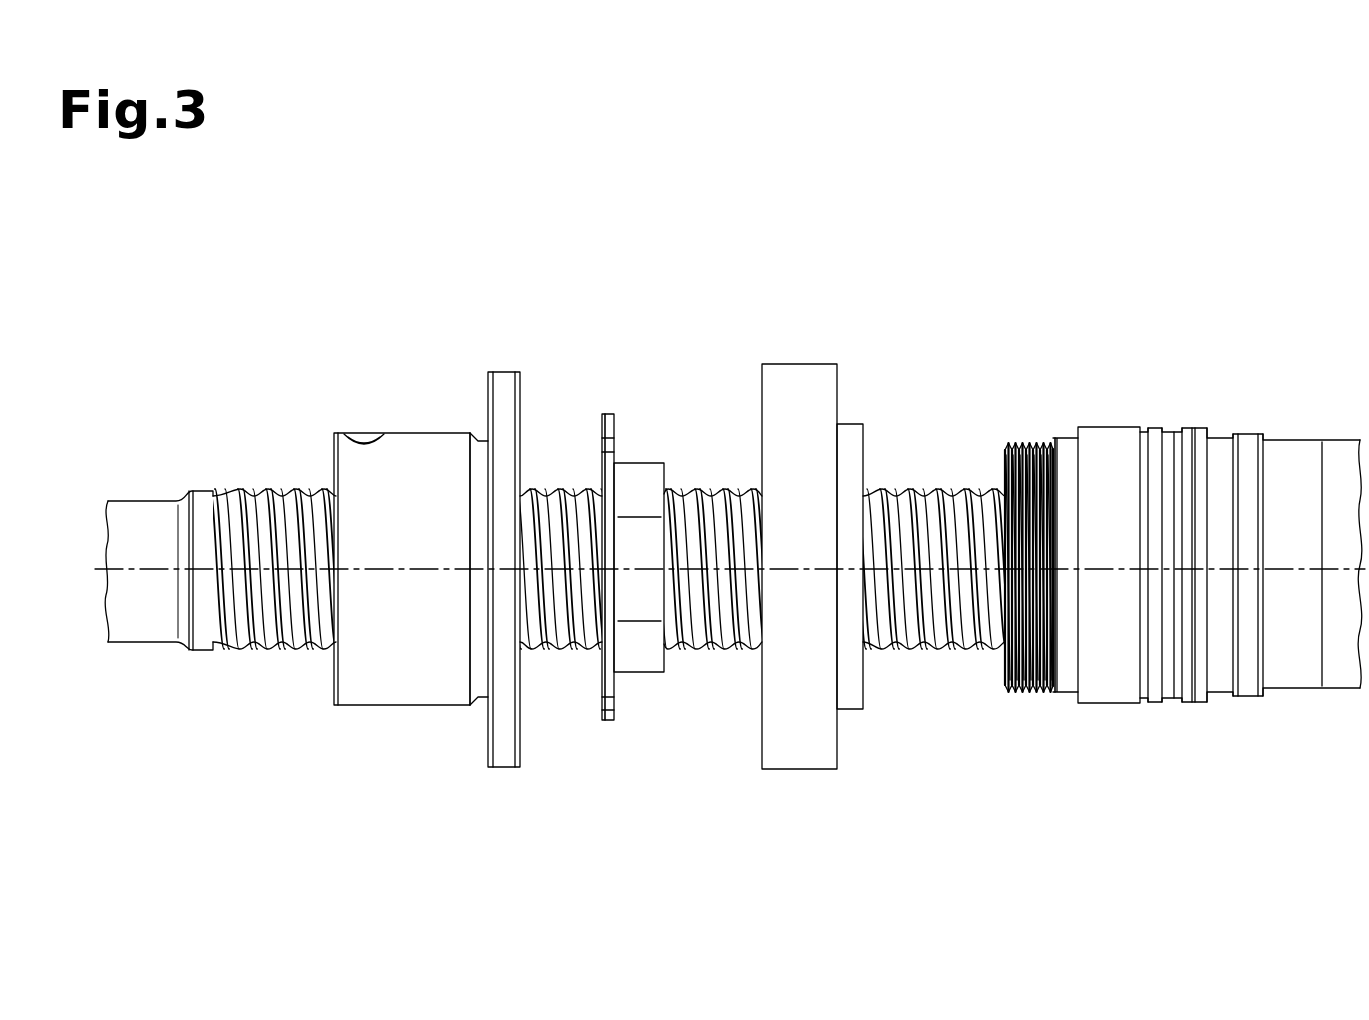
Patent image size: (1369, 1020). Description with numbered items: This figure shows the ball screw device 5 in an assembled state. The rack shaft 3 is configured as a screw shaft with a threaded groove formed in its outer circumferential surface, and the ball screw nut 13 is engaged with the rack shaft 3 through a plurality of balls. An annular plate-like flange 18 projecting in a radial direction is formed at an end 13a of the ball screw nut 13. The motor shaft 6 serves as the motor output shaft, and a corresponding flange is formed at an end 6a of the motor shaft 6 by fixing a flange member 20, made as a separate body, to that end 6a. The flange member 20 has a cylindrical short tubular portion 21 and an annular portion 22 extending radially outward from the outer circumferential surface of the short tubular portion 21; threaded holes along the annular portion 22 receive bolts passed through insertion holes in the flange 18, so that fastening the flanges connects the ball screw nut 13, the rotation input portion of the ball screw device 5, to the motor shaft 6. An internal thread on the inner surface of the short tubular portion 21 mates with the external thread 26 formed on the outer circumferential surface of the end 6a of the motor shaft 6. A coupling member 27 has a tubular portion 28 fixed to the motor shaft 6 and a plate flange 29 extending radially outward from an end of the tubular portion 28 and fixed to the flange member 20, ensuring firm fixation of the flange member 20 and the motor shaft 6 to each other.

The rack shaft 3 is at (140, 501).
The ball screw device 5 is at (231, 319).
The motor shaft 6 is at (1108, 427).
The end of the motor shaft 6a is at (1004, 458).
The ball screw nut 13 is at (431, 433).
The end of the ball screw nut 13a is at (520, 700).
The flange 18 is at (503, 372).
The flange member 20 is at (820, 519).
The short tubular portion 21 is at (850, 424).
The annular portion 22 is at (798, 364).
The external thread 26 is at (1030, 443).
The coupling member 27 is at (640, 621).
The tubular portion 28 is at (640, 673).
The plate flange 29 is at (607, 720).